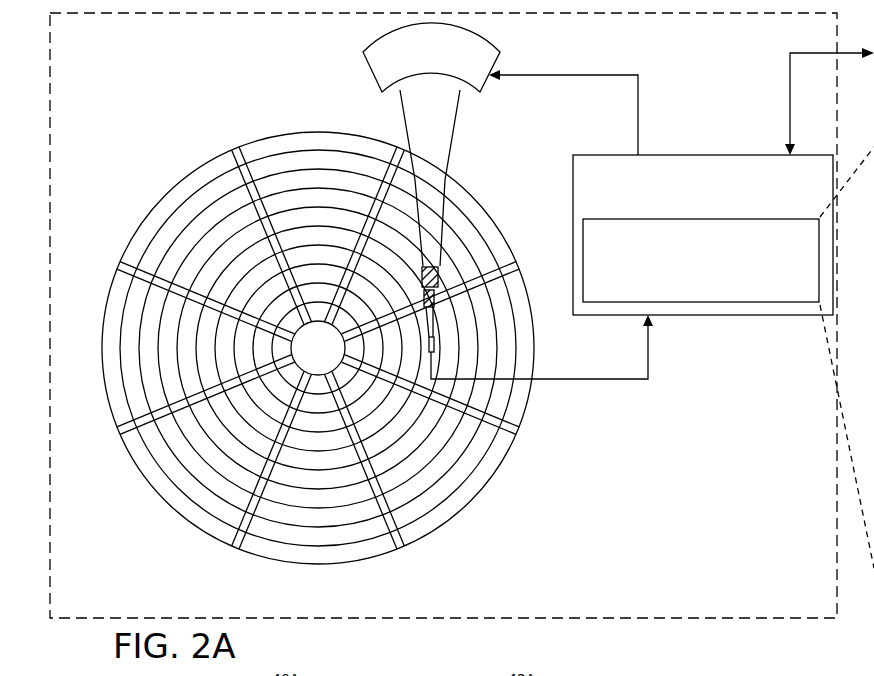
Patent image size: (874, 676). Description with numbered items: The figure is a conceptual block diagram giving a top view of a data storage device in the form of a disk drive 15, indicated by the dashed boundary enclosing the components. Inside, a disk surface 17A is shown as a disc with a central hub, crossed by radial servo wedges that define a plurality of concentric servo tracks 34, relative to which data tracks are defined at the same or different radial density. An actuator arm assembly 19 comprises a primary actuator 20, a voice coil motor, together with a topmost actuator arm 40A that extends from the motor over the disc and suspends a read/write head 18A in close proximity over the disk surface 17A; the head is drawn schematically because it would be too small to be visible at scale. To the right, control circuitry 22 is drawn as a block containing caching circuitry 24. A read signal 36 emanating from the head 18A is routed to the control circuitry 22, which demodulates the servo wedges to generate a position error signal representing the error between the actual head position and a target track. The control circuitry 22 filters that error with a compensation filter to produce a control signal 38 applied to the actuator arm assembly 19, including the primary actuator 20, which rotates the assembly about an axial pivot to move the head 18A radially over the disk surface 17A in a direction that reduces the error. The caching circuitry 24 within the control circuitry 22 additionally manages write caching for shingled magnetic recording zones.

The disk drive 15 is at (772, 628).
The disk surface 17A is at (170, 183).
The read/write head 18A is at (442, 351).
The actuator arm assembly 19 is at (474, 117).
The primary actuator 20 is at (496, 80).
The control circuitry 22 is at (712, 207).
The caching circuitry 24 is at (712, 285).
The servo tracks 34 is at (322, 150).
The read signal 36 is at (628, 381).
The control signal 38 is at (640, 97).
The actuator arm 40A is at (447, 158).